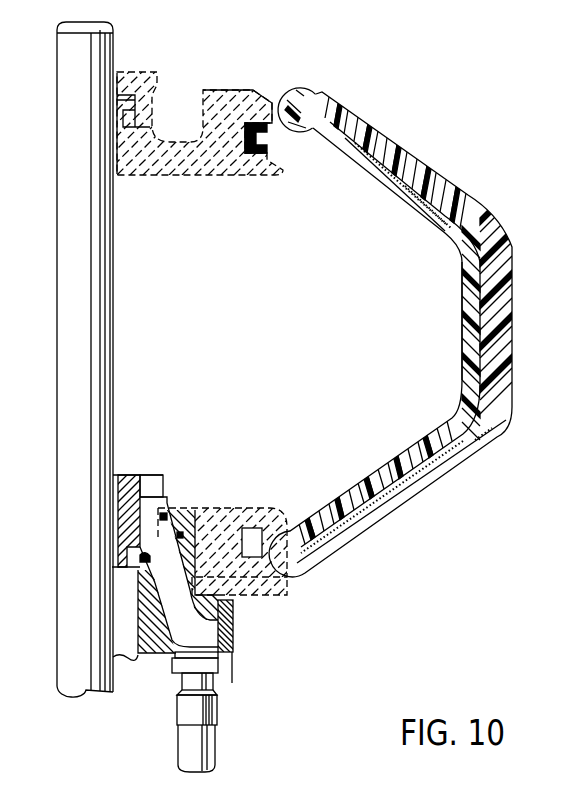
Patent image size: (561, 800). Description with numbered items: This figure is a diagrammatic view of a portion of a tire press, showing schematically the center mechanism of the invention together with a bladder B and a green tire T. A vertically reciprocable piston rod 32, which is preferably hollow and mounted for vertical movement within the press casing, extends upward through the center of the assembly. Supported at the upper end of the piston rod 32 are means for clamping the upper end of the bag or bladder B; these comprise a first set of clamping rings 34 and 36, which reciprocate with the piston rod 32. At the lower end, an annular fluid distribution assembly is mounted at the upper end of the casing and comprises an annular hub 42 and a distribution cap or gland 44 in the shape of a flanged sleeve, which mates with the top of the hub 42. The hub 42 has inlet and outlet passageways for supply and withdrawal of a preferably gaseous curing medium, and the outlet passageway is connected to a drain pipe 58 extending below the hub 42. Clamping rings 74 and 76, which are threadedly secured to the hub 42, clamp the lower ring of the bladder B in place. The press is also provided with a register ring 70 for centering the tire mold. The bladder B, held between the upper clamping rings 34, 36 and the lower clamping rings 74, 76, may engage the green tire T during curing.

The piston rod 32 is at (58, 316).
The clamping ring 34 is at (170, 176).
The clamping ring 36 is at (227, 88).
The annular hub 42 is at (168, 645).
The distribution cap 44 is at (128, 475).
The drain pipe 58 is at (218, 718).
The register ring 70 is at (231, 649).
The clamping ring 74 is at (215, 509).
The clamping ring 76 is at (268, 596).
The bladder B is at (462, 311).
The green tire T is at (513, 313).